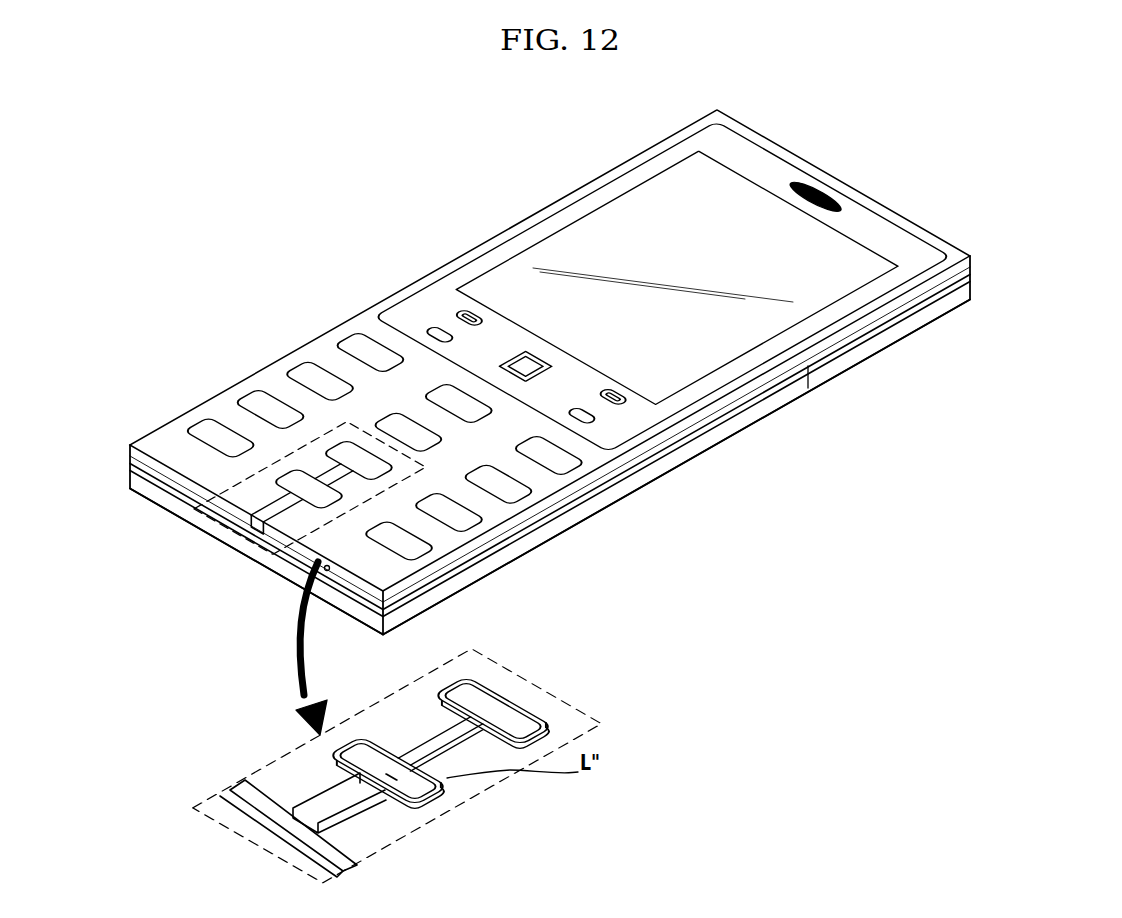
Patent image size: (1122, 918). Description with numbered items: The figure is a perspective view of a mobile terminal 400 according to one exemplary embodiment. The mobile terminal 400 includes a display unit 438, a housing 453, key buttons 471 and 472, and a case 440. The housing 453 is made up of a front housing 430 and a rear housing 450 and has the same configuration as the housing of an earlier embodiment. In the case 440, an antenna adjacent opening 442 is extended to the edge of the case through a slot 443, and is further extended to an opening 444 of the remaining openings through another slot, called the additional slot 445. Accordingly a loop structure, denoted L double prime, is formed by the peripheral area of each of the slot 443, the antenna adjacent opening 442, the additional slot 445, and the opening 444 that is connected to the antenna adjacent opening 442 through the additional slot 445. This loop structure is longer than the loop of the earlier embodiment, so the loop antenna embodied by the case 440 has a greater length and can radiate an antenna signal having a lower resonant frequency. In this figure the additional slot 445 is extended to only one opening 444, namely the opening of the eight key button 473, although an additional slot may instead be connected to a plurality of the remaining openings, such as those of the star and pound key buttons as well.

The mobile terminal 400 is at (1031, 149).
The front housing 430 is at (913, 303).
The display unit 438 is at (736, 210).
The case 440 is at (207, 396).
The antenna adjacent opening 442 is at (394, 738).
The slot 443 is at (308, 806).
The opening 444 is at (531, 710).
The additional slot 445 is at (438, 738).
The rear housing 450 is at (877, 340).
The housing 453 is at (575, 449).
The key button 471 is at (247, 387).
The key button 472 is at (428, 787).
The key button '8' 473 is at (522, 697).